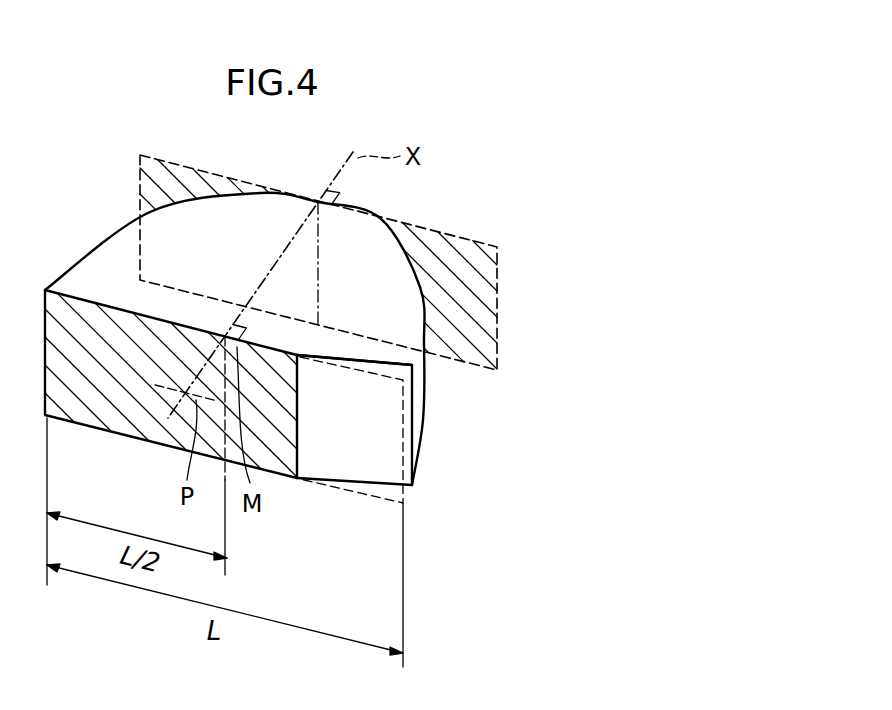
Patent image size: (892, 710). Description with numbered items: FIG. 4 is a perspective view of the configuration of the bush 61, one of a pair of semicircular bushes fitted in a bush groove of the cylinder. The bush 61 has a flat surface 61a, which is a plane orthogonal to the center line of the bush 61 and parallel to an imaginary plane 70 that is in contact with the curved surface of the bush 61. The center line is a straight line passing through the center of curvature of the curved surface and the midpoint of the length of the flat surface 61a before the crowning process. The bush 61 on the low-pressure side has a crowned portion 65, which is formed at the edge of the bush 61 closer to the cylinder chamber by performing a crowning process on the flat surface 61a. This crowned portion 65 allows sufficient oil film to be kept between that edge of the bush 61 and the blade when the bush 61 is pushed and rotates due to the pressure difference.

The bush 61 is at (94, 251).
The flat surface 61a is at (112, 412).
The crowned portion 65 is at (348, 453).
The imaginary plane 70 is at (478, 304).